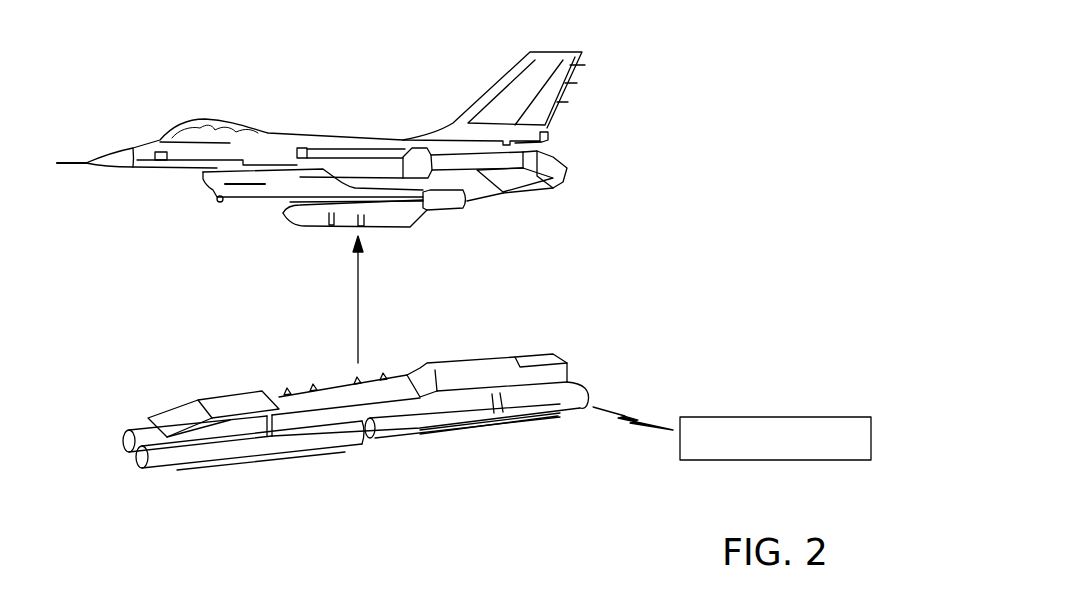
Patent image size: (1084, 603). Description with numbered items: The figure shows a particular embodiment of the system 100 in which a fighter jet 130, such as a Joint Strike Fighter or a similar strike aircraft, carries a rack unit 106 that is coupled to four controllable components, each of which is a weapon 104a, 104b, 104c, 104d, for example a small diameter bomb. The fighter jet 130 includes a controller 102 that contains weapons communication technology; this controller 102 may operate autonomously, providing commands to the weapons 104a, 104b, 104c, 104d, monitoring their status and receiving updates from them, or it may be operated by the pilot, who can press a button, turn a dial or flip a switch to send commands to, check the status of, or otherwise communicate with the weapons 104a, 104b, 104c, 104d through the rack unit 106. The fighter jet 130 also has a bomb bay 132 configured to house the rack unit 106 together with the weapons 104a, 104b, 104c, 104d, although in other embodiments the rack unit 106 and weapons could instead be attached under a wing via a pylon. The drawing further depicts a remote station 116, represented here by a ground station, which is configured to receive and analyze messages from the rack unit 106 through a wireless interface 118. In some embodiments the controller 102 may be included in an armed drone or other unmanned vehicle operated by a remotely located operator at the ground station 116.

The system 100 is at (700, 79).
The fighter jet 130 is at (178, 82).
The controller 102 is at (147, 172).
The bomb bay 132 is at (297, 223).
The rack unit 106 is at (225, 406).
The weapon 104a is at (123, 444).
The weapon 104b is at (133, 462).
The weapon 104c is at (577, 373).
The weapon 104d is at (370, 438).
The wireless interface 118 is at (620, 421).
The remote station 116 is at (773, 460).